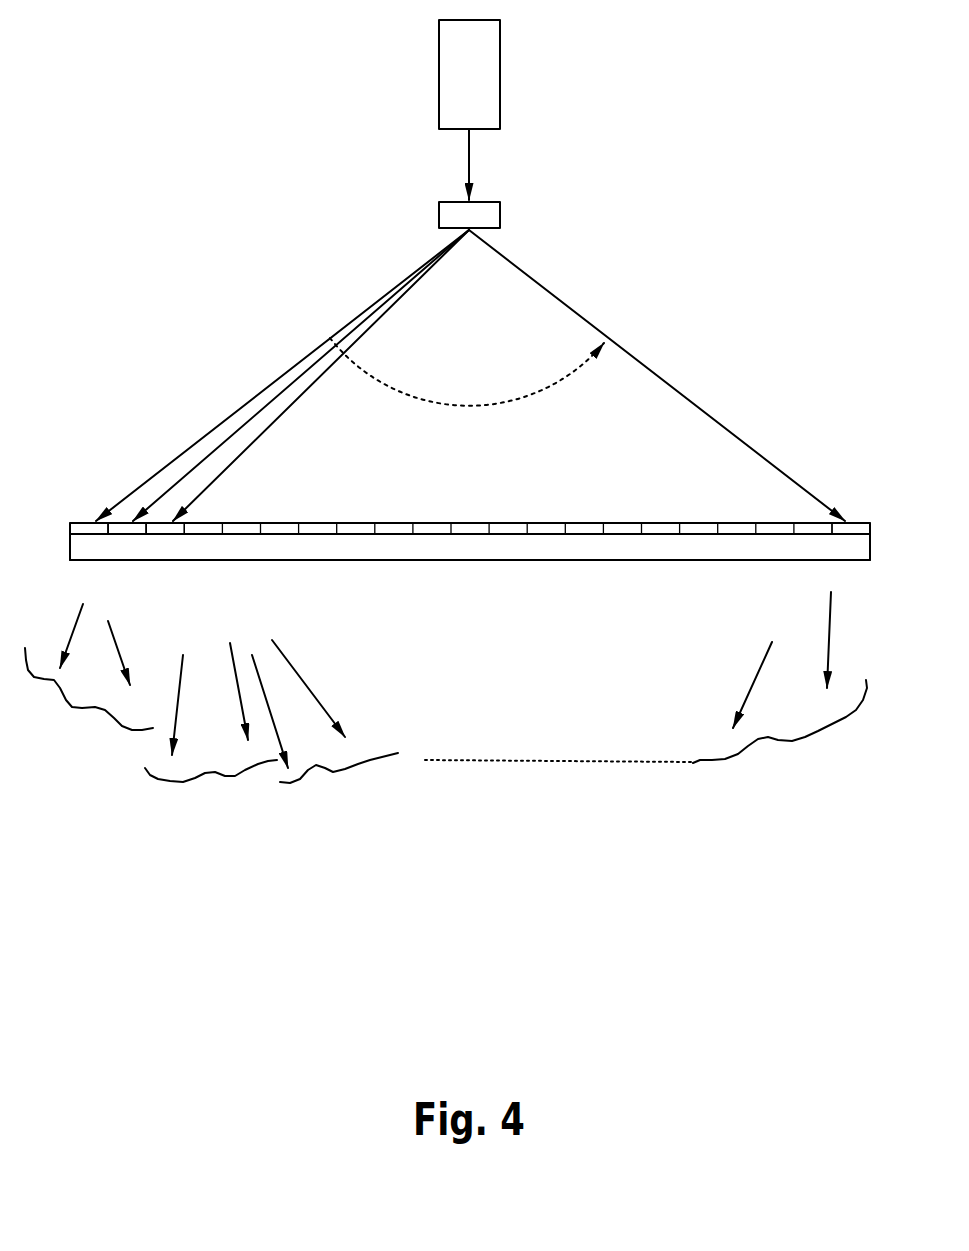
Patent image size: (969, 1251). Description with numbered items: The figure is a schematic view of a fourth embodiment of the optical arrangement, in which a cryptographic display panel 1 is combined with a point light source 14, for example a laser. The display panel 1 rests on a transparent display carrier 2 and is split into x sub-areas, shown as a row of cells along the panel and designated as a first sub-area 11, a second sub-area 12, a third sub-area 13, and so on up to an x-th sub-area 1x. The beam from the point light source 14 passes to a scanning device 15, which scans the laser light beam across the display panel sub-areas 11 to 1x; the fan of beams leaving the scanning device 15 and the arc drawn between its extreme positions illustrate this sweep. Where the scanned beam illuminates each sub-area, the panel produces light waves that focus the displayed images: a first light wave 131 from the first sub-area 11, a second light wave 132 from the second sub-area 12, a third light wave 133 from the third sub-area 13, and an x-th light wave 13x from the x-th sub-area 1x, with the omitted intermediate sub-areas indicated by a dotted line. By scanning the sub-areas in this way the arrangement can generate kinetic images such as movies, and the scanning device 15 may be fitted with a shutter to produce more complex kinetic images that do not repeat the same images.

The point light source 14 is at (480, 100).
The scanning device 15 is at (488, 216).
The cryptographic display panel 1 is at (852, 528).
The transparent display carrier 2 is at (838, 552).
The first display panel sub-area 11 is at (95, 520).
The second display panel sub-area 12 is at (132, 528).
The third display panel sub-area 13 is at (170, 528).
The x-th display panel sub-area 1x is at (843, 528).
The first light wave 131 is at (113, 723).
The second light wave 132 is at (218, 775).
The third light wave 133 is at (322, 767).
The x-th light wave 13x is at (782, 742).